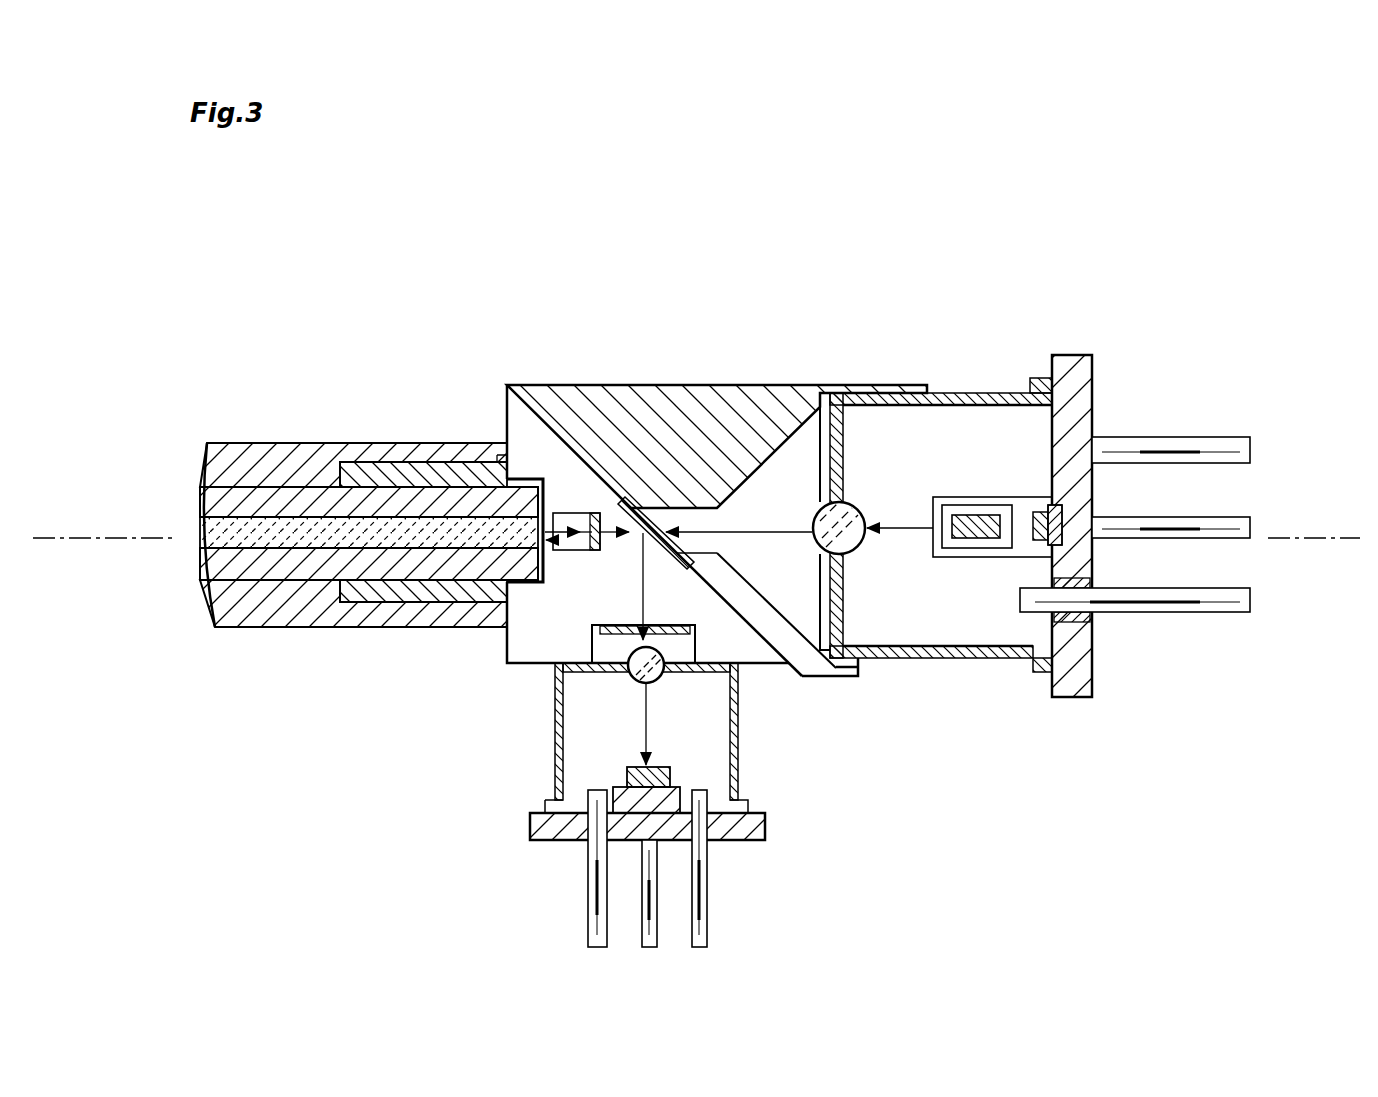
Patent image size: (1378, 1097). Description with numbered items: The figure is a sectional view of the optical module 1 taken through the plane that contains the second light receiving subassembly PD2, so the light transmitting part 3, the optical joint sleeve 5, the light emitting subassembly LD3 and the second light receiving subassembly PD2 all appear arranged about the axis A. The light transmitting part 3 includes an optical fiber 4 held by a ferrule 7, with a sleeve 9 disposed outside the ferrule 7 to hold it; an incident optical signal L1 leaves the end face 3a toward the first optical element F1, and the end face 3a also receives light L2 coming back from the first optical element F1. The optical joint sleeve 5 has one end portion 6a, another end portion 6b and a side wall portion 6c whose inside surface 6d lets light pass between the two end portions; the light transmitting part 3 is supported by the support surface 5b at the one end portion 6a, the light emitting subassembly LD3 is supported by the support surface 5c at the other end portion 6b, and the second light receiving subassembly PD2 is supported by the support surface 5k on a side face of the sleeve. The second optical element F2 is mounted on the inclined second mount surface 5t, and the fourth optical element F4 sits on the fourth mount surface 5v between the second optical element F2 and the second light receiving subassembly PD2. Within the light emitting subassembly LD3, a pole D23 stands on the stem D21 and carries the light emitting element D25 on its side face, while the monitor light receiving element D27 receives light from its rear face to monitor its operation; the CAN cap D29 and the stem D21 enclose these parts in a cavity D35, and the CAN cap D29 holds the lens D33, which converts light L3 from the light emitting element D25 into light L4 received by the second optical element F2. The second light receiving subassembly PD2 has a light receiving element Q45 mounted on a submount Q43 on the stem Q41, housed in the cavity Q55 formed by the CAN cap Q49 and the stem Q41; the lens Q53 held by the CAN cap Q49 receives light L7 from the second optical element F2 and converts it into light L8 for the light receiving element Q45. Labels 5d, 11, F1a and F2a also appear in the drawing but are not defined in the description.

The optical module 1 is at (951, 224).
The light transmitting part 3 is at (371, 462).
The end face 3a is at (545, 484).
The optical fiber 4 is at (235, 530).
The optical joint sleeve 5 is at (673, 502).
The support surface 5b is at (496, 598).
The support surface 5c is at (888, 402).
The housing end portion 5d is at (880, 384).
The second mount surface 5t is at (598, 510).
The support surface 5k is at (742, 666).
The fourth mount surface 5v is at (748, 678).
The one end portion 6a is at (503, 386).
The another end portion 6b is at (951, 376).
The side wall portion 6c is at (737, 488).
The inside surface 6d is at (720, 510).
The ferrule 7 is at (273, 497).
The sleeve 9 is at (365, 463).
The outer holder 11 is at (405, 443).
The first optical element F1 is at (597, 513).
The filter holder F1a is at (560, 518).
The second optical element F2 is at (637, 494).
The filter end portion F2a is at (669, 562).
The fourth optical element F4 is at (576, 668).
The incident optical signal L1 is at (590, 540).
The light L2 is at (557, 555).
The light L3 is at (900, 516).
The light L4 is at (739, 520).
The light L7 is at (654, 586).
The light L8 is at (659, 724).
The light emitting subassembly LD3 is at (1031, 492).
The stem D21 is at (1080, 650).
The pole D23 is at (1012, 500).
The light emitting element D25 is at (978, 540).
The monitor light receiving element D27 is at (1043, 536).
The CAN cap D29 is at (1014, 666).
The lens D33 is at (860, 548).
The cavity D35 is at (940, 622).
The second light receiving subassembly PD2 is at (667, 797).
The stem Q41 is at (540, 838).
The submount Q43 is at (683, 790).
The light receiving element Q45 is at (657, 767).
The CAN cap Q49 is at (556, 770).
The lens Q53 is at (640, 683).
The cavity Q55 is at (556, 745).
The axis A is at (117, 538).